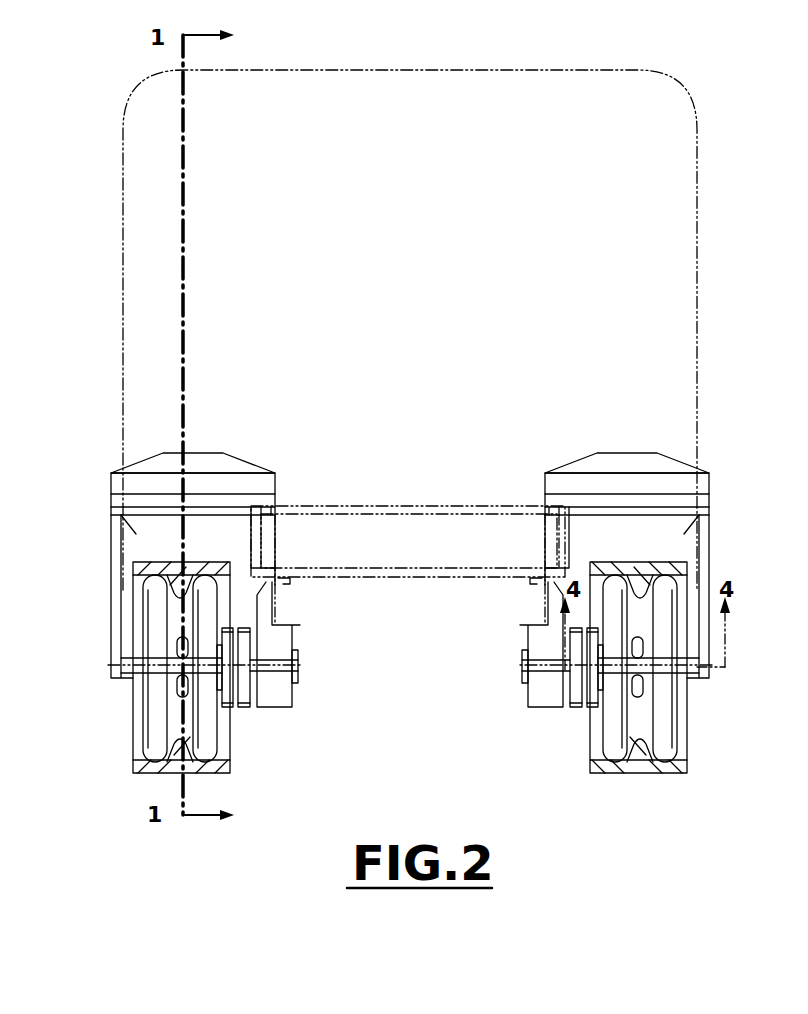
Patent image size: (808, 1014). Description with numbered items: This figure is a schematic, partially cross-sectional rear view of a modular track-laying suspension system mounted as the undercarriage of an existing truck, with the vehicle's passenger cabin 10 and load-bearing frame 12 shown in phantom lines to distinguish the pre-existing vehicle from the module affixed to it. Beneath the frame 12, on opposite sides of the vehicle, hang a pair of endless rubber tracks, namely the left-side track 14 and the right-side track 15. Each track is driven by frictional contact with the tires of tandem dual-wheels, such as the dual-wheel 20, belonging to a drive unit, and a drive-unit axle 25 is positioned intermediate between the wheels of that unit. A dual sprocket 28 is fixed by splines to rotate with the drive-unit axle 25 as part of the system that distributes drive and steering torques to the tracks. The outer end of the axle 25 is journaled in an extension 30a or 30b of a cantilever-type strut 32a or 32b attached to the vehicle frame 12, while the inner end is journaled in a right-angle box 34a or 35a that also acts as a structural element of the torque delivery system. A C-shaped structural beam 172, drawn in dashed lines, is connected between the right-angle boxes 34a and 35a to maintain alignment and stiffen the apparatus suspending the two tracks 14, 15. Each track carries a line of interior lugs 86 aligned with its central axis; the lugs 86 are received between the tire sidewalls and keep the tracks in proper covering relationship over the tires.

The passenger cabin 10 is at (162, 245).
The load-bearing frame 12 is at (283, 584).
The left-side track 14 is at (140, 755).
The right-side track 15 is at (615, 768).
The dual-wheel 20 is at (205, 711).
The drive-unit axle 25 is at (273, 668).
The dual sprocket 28 is at (228, 704).
The extension 30a is at (110, 640).
The extension 30b is at (707, 673).
The cantilever-type strut 32a is at (205, 464).
The cantilever-type strut 32b is at (613, 464).
The right-angle box 34a is at (280, 645).
The right-angle box 35a is at (533, 690).
The interior lug 86 is at (180, 586).
The C-shaped structural beam 172 is at (390, 512).